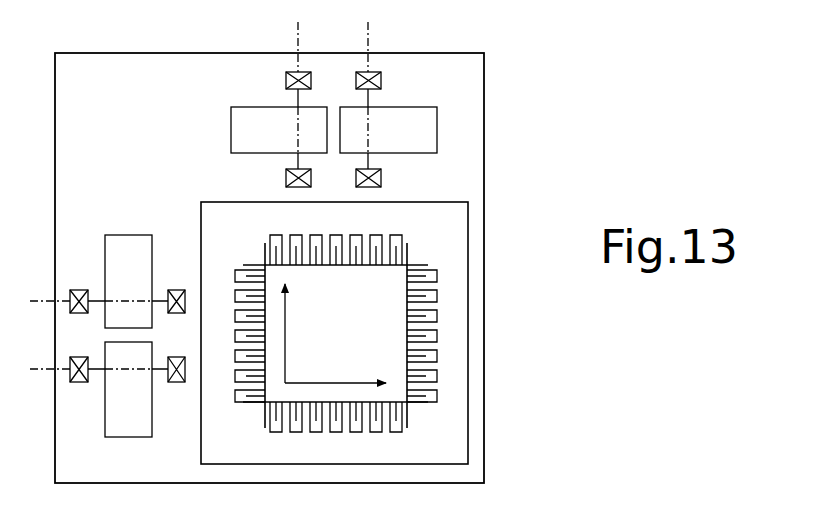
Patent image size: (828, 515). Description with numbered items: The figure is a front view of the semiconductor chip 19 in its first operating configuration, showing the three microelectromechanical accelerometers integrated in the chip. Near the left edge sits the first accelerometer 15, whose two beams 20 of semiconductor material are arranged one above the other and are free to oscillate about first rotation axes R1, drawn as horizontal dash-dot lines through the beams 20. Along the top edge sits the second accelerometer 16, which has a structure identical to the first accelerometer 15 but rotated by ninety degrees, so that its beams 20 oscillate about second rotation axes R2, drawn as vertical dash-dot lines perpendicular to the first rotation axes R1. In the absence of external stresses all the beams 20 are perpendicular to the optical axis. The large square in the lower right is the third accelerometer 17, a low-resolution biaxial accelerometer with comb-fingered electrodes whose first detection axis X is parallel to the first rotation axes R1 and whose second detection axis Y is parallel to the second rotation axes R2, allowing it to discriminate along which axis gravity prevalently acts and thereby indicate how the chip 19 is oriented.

The first accelerometer 15 is at (119, 220).
The second accelerometer 16 is at (211, 128).
The third accelerometer 17 is at (455, 433).
The semiconductor chip 19 is at (558, 177).
The beams 20 is at (250, 108).
The first rotation axes R1 is at (37, 367).
The second rotation axes R2 is at (367, 40).